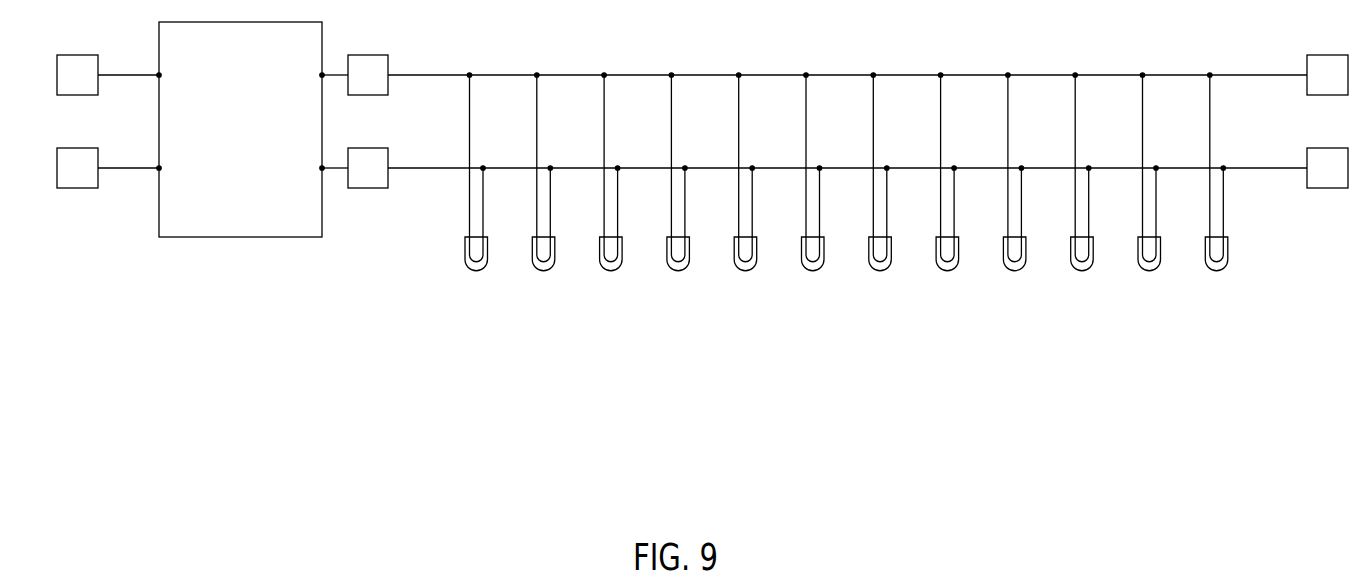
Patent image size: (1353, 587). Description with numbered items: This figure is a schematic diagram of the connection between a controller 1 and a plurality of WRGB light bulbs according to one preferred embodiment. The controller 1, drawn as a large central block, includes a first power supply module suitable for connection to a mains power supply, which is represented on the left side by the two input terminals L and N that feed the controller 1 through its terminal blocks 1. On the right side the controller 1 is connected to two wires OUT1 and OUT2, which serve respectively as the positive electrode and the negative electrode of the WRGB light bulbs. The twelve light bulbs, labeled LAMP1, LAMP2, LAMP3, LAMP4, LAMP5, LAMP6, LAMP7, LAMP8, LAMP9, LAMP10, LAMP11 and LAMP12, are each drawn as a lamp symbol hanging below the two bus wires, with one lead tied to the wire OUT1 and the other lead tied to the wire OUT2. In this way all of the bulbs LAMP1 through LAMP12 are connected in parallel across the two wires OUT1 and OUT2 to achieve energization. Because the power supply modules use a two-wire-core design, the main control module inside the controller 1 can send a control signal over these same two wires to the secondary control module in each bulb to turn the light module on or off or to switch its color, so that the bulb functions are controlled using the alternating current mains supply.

The controller 1 is at (710, 121).
The line input terminal L is at (99, 75).
The neutral input terminal N is at (98, 168).
The wire OUT1 is at (813, 74).
The wire OUT2 is at (813, 173).
The lamp 1 LAMP1 is at (493, 173).
The lamp 2 LAMP2 is at (560, 173).
The lamp 3 LAMP3 is at (628, 173).
The lamp 4 LAMP4 is at (695, 173).
The lamp 5 LAMP5 is at (762, 173).
The lamp 6 LAMP6 is at (830, 173).
The lamp 7 LAMP7 is at (897, 173).
The lamp 8 LAMP8 is at (964, 173).
The lamp 9 LAMP9 is at (1031, 173).
The lamp 10 LAMP10 is at (1101, 173).
The lamp 11 LAMP11 is at (1168, 173).
The lamp 12 LAMP12 is at (1235, 173).